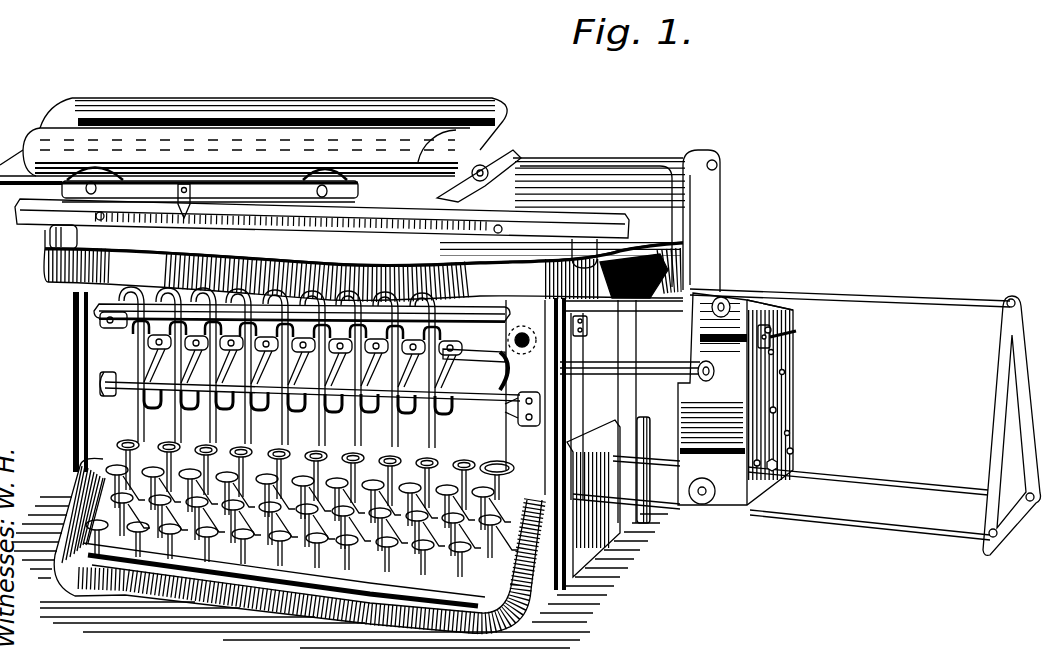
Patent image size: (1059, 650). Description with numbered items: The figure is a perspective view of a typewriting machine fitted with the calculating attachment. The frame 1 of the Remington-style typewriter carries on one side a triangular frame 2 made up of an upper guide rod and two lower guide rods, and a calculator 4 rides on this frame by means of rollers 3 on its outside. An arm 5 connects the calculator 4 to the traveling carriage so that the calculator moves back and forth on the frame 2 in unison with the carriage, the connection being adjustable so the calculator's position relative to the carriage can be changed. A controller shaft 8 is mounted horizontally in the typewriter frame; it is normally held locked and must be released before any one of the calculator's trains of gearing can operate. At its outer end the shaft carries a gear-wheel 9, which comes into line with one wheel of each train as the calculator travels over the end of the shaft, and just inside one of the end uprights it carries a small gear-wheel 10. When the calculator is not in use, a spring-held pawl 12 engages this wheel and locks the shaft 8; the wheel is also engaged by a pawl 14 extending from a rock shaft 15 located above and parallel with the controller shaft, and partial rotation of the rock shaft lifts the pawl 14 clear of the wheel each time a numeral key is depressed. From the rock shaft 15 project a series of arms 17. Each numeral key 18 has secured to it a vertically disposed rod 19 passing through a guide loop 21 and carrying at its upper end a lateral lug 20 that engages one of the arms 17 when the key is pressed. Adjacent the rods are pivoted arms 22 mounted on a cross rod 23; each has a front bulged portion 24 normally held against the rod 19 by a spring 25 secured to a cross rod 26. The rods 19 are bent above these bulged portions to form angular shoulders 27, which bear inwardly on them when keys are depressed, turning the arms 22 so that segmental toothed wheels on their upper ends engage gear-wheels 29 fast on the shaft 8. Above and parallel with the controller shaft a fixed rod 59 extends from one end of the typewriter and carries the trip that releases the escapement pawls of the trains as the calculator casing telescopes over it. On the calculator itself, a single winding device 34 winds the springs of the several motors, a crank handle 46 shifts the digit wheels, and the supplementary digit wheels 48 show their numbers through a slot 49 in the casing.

The frame 1 is at (71, 382).
The triangular frame 2 is at (1003, 425).
The rollers 3 is at (733, 298).
The calculator 4 is at (735, 399).
The arm 5 is at (700, 283).
The controller shaft 8 is at (672, 363).
The gear-wheel 9 is at (714, 380).
The small gear-wheel 10 is at (534, 318).
The spring-held pawl 12 is at (524, 425).
The pawl 14 is at (363, 271).
The rock shaft 15 is at (162, 298).
The arms 17 is at (488, 268).
The numeral key 18 is at (222, 405).
The vertically disposed rod 19 is at (262, 410).
The lateral lug 20 is at (127, 298).
The guide loop 21 is at (302, 327).
The pivoted arms 22 is at (128, 392).
The cross rod 23 is at (405, 412).
The front bulged portion 24 is at (440, 405).
The spring 25 is at (335, 412).
The cross rod 26 is at (503, 415).
The angular shoulders 27 is at (370, 412).
The gear-wheels 29 is at (450, 362).
The winding device 34 is at (778, 467).
The crank handle 46 is at (782, 337).
The digit wheels 48 is at (760, 288).
The slot 49 is at (772, 294).
The fixed rod 59 is at (640, 316).